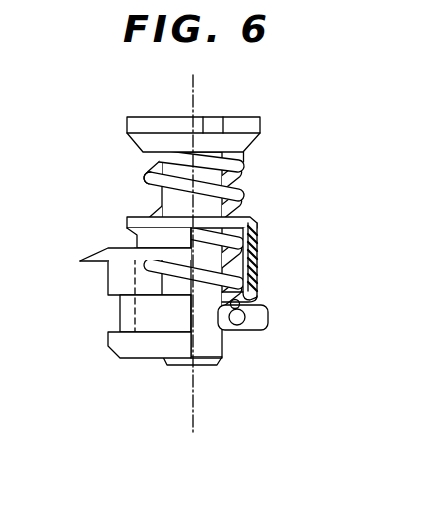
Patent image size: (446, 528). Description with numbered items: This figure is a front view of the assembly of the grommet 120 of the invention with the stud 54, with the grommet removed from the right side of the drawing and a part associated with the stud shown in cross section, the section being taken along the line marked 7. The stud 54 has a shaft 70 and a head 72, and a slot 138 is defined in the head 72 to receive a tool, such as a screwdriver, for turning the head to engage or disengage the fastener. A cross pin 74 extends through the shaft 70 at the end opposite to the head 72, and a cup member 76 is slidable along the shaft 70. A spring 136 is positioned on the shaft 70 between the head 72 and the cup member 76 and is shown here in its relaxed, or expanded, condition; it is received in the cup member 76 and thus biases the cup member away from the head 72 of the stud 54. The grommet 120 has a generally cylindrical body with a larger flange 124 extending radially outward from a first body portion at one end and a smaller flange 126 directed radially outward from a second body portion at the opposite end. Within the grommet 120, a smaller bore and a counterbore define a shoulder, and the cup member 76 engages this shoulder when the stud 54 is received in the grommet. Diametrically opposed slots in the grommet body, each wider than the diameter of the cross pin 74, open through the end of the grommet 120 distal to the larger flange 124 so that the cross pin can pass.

The stud 54 is at (118, 127).
The head 72 is at (145, 122).
The slot 138 is at (217, 125).
The shaft 70 is at (246, 172).
The spring 136 is at (148, 179).
The grommet 120 is at (103, 284).
The larger flange 124 is at (94, 252).
The smaller flange 126 is at (108, 348).
The cup member 76 is at (254, 243).
The cross pin 74 is at (262, 320).
The section line 7- 7 is at (198, 83).